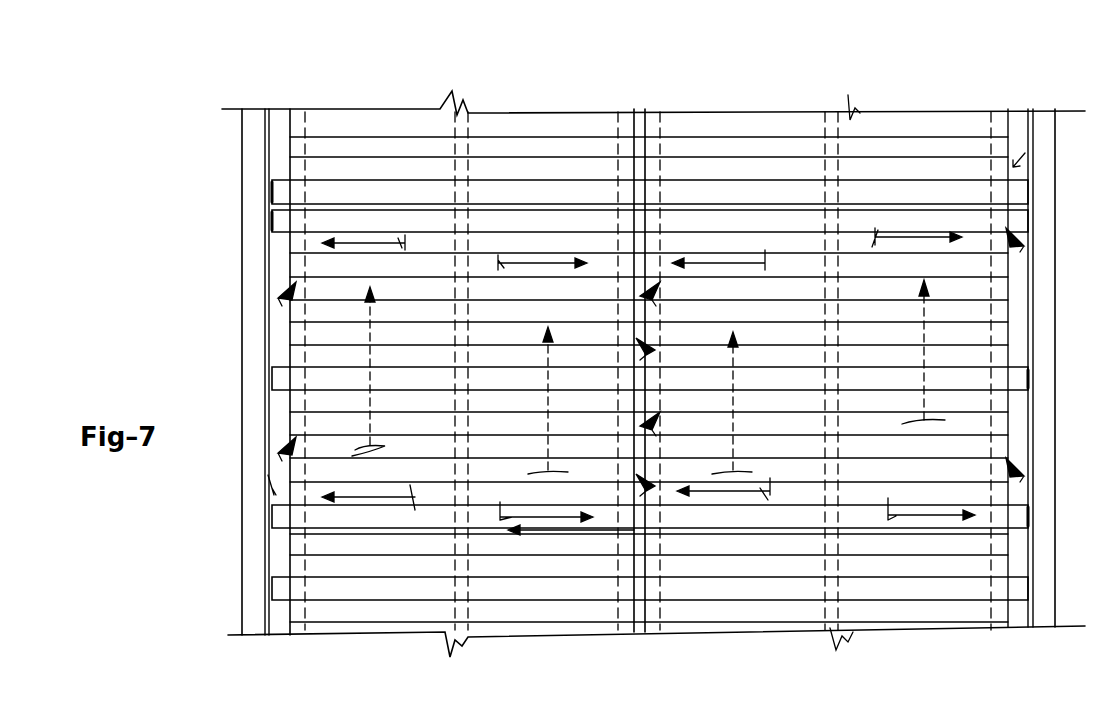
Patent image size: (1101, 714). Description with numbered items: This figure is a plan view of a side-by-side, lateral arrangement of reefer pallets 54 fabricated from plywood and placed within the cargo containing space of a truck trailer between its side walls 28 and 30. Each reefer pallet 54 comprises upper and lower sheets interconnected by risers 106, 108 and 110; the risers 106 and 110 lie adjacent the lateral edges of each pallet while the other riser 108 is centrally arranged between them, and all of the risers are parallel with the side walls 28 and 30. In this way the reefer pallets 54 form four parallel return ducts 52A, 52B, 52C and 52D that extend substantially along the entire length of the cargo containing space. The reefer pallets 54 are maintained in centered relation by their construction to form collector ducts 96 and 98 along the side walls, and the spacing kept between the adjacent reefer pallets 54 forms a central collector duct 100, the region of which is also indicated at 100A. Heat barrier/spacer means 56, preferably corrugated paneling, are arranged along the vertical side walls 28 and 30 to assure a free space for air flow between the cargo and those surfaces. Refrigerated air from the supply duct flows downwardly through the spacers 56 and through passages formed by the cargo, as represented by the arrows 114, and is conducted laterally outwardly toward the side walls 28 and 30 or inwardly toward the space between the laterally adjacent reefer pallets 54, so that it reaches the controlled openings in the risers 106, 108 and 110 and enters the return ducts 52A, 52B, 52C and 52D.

The side wall 28 is at (1057, 382).
The side wall 30 is at (262, 222).
The return duct 52A is at (392, 582).
The return duct 52B is at (556, 582).
The return duct 52C is at (748, 582).
The return duct 52D is at (936, 582).
The reefer pallet 54 is at (318, 170).
The heat barrier/spacer means 56 is at (268, 140).
The collector duct 96 is at (1025, 533).
The collector duct 98 is at (280, 547).
The central collector duct 100 is at (643, 605).
The center post diverter arrows 100A is at (638, 335).
The riser 106 is at (700, 72).
The central riser 108 is at (468, 125).
The riser 110 is at (618, 160).
The arrows 114 is at (370, 390).